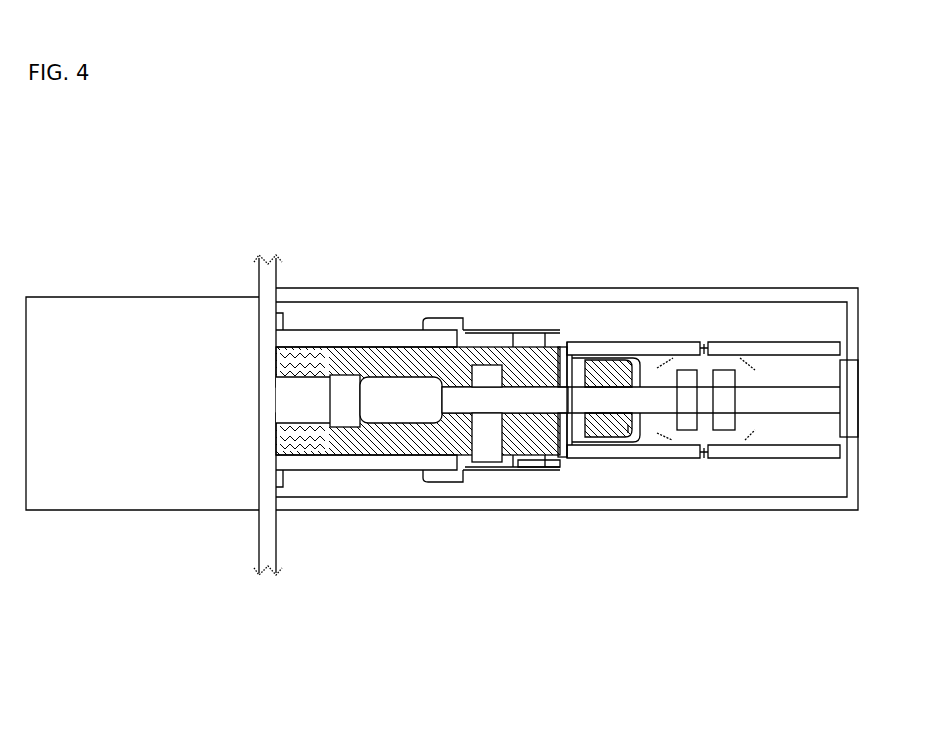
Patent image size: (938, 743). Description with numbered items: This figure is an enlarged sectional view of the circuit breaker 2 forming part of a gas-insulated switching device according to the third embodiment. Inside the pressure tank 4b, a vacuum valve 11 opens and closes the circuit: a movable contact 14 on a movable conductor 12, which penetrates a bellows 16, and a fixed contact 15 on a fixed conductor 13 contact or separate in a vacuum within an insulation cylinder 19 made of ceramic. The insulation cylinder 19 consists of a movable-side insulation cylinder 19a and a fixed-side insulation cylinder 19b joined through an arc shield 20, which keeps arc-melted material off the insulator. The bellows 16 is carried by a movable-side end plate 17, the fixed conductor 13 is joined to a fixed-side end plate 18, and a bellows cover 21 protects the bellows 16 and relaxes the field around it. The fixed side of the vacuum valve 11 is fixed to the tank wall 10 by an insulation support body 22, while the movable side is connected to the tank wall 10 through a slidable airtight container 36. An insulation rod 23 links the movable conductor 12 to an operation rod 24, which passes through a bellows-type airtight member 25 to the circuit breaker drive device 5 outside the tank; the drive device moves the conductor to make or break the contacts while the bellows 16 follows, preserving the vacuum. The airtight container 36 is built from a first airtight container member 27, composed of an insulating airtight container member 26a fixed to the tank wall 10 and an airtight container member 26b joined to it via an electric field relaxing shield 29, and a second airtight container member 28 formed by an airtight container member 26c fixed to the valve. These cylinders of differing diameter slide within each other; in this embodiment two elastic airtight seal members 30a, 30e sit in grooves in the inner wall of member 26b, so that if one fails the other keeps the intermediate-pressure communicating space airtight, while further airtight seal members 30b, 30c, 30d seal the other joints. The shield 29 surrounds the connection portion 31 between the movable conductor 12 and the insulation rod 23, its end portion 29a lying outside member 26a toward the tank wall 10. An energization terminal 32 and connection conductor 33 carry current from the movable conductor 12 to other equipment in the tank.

The circuit breaker 2 is at (663, 213).
The pressure tank 4b is at (245, 280).
The circuit breaker drive device 5 is at (155, 482).
The tank wall 10 is at (265, 543).
The vacuum valve 11 is at (665, 323).
The movable conductor 12 is at (657, 398).
The fixed conductor 13 is at (780, 398).
The movable contact 14 is at (627, 447).
The fixed contact 15 is at (750, 435).
The bellows 16 is at (608, 352).
The movable-side end plate 17 is at (597, 373).
The fixed-side end plate 18 is at (853, 380).
The insulation cylinder 19 is at (638, 578).
The movable-side insulation cylinder 19a is at (683, 430).
The fixed-side insulation cylinder 19b is at (722, 430).
The arc shield 20 is at (760, 442).
The bellows cover 21 is at (628, 430).
The insulation support body 22 is at (738, 293).
The insulation rod 23 is at (398, 405).
The operation rod 24 is at (348, 397).
The airtight member 25 is at (288, 412).
The airtight container member 26a is at (410, 460).
The airtight container member 26b is at (470, 462).
The airtight container member 26c is at (535, 465).
The first airtight container member 27 is at (325, 662).
The second airtight container member 28 is at (535, 466).
The electric field relaxing shield 29 is at (440, 470).
The end portion 29a is at (425, 478).
The airtight seal member 30a is at (527, 333).
The airtight seal member 30b is at (277, 328).
The airtight seal member 30c is at (427, 320).
The airtight seal member 30d is at (556, 356).
The airtight seal member 30e is at (523, 340).
The connection portion 31 is at (435, 397).
The energization terminal 32 is at (485, 380).
The connection conductor 33 is at (490, 455).
The airtight container 36 is at (408, 313).